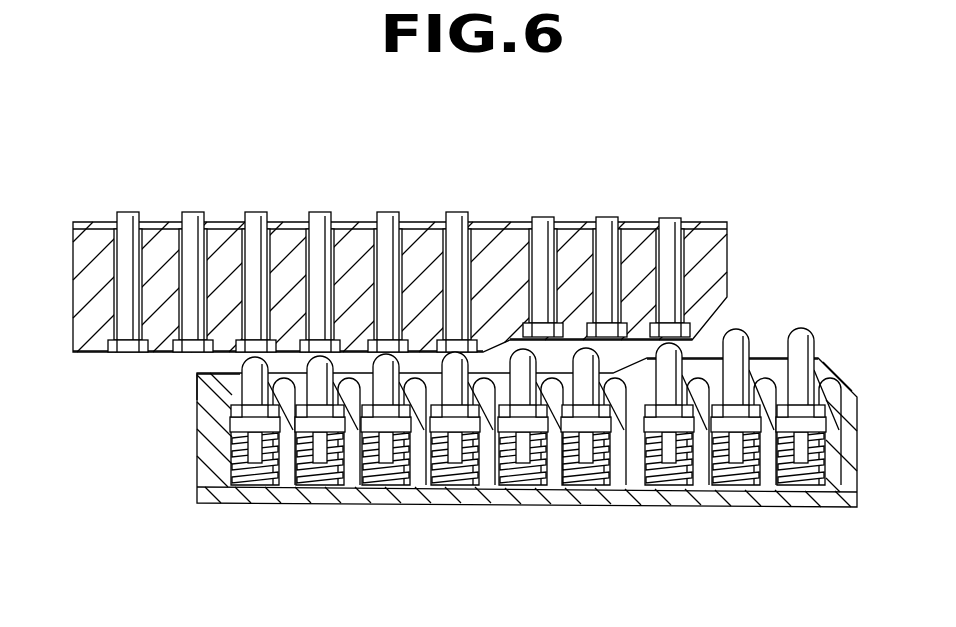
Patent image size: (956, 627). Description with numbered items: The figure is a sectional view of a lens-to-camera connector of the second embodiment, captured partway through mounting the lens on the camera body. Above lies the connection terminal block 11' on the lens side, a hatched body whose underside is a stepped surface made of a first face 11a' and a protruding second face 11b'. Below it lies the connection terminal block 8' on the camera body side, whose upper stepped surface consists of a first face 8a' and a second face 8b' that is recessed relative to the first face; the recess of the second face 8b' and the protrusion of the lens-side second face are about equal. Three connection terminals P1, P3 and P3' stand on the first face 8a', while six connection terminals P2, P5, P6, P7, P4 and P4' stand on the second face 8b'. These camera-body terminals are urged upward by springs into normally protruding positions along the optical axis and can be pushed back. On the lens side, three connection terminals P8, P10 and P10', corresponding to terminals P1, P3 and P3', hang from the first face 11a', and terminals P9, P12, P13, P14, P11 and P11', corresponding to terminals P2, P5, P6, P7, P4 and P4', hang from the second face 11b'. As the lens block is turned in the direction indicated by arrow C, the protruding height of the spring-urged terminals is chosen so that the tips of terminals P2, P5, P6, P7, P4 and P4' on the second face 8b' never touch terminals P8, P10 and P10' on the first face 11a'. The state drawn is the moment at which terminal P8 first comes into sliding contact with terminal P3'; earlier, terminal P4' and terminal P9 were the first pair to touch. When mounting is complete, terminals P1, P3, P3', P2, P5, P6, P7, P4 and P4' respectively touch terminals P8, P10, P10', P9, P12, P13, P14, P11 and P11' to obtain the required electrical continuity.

The connection terminal block 11' is at (400, 246).
The first face 11a' is at (601, 240).
The second face 11b' is at (278, 392).
The connection terminal P11' is at (139, 246).
The connection terminal P11 is at (203, 246).
The connection terminal P14 is at (290, 330).
The connection terminal P13 is at (350, 341).
The connection terminal P12 is at (415, 341).
The connection terminal P9 is at (482, 341).
The connection terminal P10' is at (535, 239).
The connection terminal P10 is at (599, 239).
The connection terminal P8 is at (692, 273).
The direction of movement C is at (848, 268).
The connection terminal block 8' is at (554, 432).
The first face 8a' is at (732, 316).
The second face 8b' is at (186, 399).
The connection terminal P4' is at (266, 463).
The connection terminal P4 is at (332, 463).
The connection terminal P7 is at (425, 470).
The connection terminal P6 is at (490, 470).
The connection terminal P5 is at (562, 470).
The connection terminal P2 is at (628, 470).
The connection terminal P3' is at (679, 456).
The connection terminal P3 is at (746, 449).
The connection terminal P1 is at (830, 470).